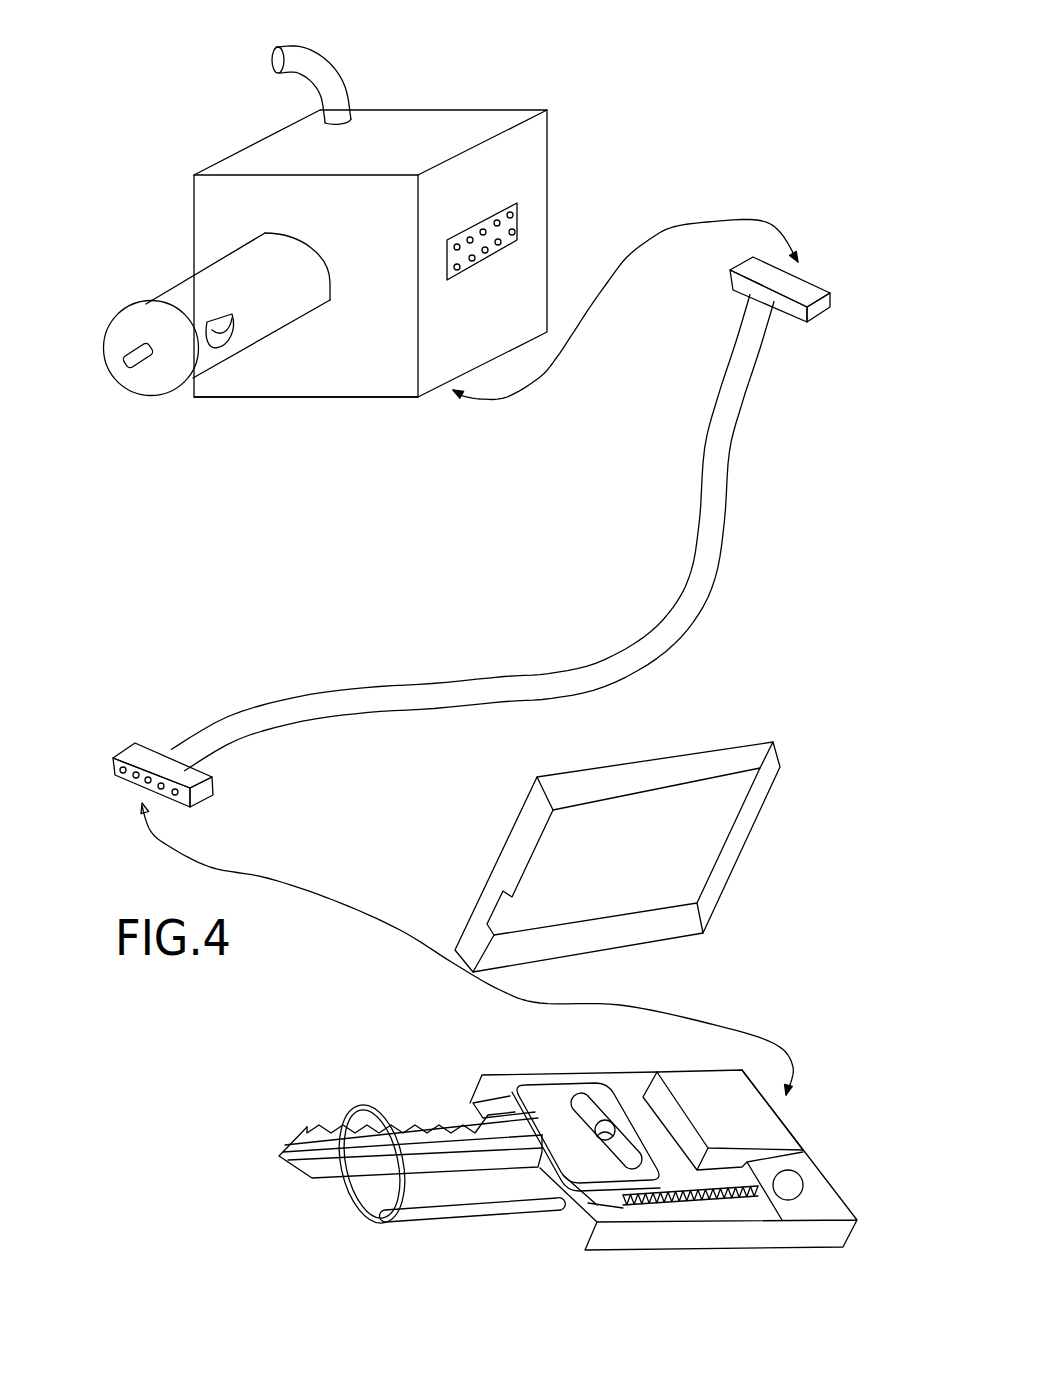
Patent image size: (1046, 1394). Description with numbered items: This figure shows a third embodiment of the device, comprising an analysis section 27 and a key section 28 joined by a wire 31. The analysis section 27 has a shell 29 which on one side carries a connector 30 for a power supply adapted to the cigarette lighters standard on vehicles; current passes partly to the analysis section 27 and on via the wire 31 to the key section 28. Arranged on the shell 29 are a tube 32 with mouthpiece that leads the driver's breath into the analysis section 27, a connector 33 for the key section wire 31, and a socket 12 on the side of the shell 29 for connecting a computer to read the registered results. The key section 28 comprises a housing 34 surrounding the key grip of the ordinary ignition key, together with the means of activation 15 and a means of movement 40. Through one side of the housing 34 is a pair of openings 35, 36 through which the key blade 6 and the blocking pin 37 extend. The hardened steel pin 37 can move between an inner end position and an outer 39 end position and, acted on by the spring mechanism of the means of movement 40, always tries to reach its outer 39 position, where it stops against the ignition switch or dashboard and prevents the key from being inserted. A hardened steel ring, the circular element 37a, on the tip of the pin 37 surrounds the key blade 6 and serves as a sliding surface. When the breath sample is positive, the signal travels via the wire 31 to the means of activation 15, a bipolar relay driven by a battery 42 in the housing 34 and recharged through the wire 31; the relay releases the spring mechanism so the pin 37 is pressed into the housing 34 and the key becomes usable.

The key blade 6 is at (428, 1167).
The socket 12 is at (507, 230).
The means of activation 15 is at (813, 1207).
The analysis section 27 is at (465, 92).
The key section 28 is at (762, 1013).
The shell 29 is at (533, 147).
The connector 30 is at (178, 294).
The wire 31 is at (710, 430).
The tube 32 is at (327, 75).
The connector 33 is at (390, 415).
The housing 34 is at (453, 1048).
The opening 35 is at (473, 1103).
The opening 36 is at (558, 1210).
The pin 37 is at (483, 1212).
The circular element 37a is at (358, 1103).
The outer end position 39 is at (337, 1218).
The means of movement 40 is at (690, 1200).
The battery 42 is at (795, 1177).